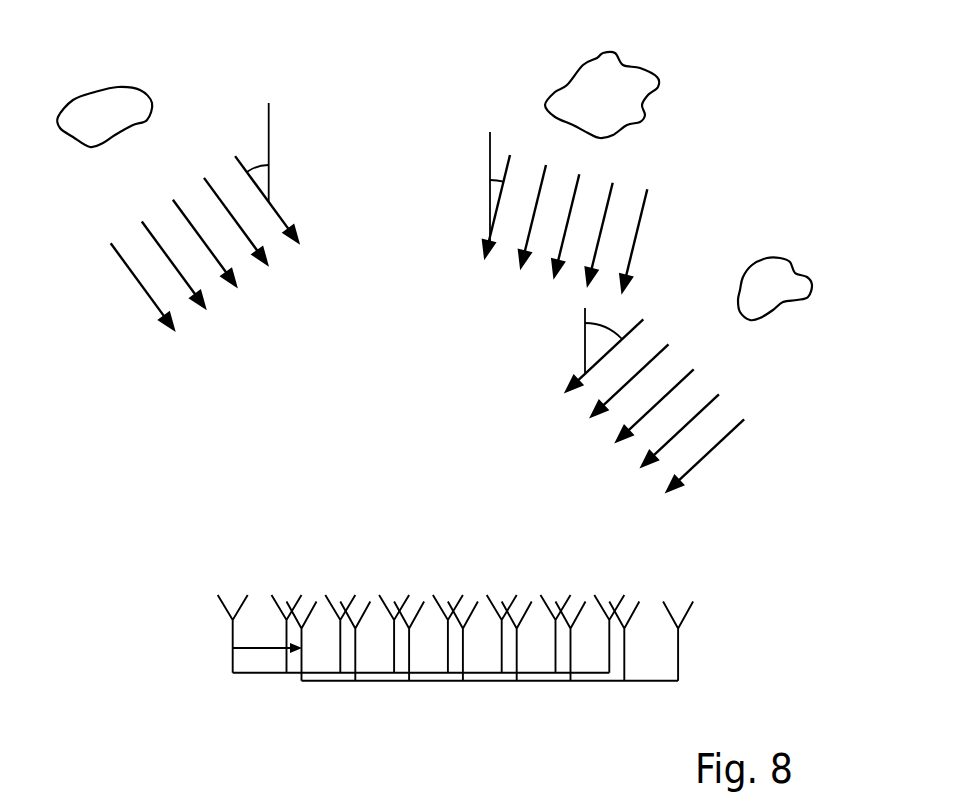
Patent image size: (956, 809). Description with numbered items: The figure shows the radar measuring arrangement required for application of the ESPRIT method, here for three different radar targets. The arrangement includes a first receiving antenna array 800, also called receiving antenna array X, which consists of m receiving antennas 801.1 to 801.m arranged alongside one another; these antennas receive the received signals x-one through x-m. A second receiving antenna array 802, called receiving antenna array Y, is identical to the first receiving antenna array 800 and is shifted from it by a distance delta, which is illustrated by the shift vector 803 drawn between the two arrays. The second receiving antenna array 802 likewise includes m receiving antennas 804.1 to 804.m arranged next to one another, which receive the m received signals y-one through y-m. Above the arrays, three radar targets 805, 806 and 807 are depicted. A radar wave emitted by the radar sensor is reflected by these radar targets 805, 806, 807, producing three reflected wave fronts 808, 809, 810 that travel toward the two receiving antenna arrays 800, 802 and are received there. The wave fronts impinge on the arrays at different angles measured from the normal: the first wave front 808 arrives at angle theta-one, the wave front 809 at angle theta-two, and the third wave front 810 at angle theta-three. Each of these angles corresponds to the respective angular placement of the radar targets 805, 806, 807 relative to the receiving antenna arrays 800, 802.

The first receiving antenna array 800 is at (268, 673).
The receiving antenna 801.1 is at (222, 602).
The receiving antenna 801.m is at (598, 602).
The receiving antenna 804.1 is at (330, 602).
The receiving antenna 804.m is at (682, 610).
The second receiving antenna array 802 is at (648, 681).
The shift vector 803 is at (248, 652).
The radar target 805 is at (128, 98).
The radar target 806 is at (590, 82).
The radar target 807 is at (782, 270).
The first wave front 808 is at (124, 295).
The wave front 809 is at (660, 232).
The third wave front 810 is at (744, 471).